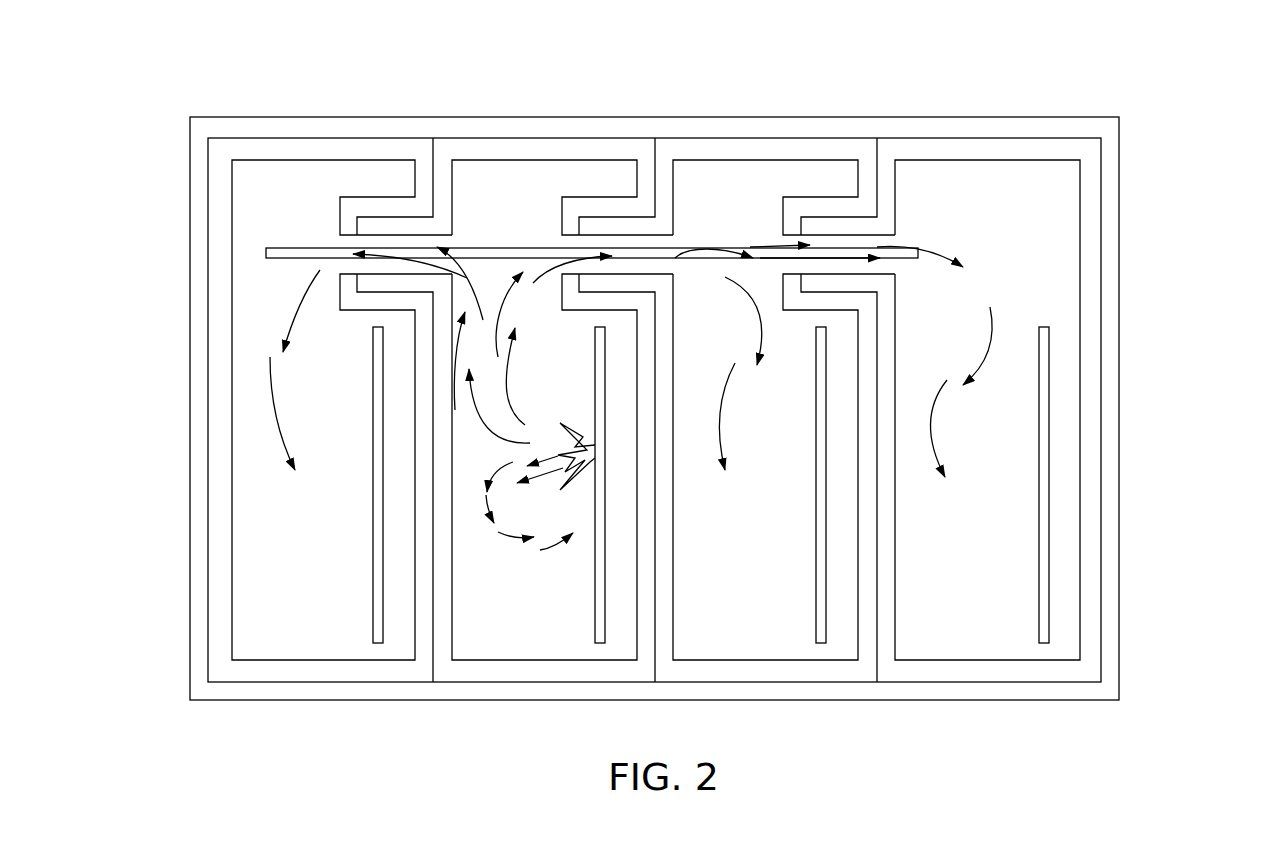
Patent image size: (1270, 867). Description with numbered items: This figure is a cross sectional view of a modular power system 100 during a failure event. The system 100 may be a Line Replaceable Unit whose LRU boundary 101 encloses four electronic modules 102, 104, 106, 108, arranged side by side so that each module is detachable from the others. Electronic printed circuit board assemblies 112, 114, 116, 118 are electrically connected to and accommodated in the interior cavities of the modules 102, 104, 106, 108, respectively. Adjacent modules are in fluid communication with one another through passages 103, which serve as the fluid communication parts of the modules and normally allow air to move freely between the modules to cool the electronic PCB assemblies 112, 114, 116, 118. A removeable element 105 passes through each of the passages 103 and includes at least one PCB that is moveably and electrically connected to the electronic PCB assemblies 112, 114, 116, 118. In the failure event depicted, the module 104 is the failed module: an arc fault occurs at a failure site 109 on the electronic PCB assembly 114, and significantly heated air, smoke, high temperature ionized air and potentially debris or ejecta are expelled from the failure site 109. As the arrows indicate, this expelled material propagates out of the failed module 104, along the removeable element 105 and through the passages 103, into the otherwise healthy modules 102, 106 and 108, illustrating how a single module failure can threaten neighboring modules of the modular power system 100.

The modular power system 100 is at (1145, 73).
The LRU boundary 101 is at (200, 237).
The electronic module 102 is at (305, 148).
The passage 103 is at (378, 263).
The electronic module 104 is at (545, 148).
The removeable element 105 is at (323, 248).
The electronic module 106 is at (770, 148).
The electronic module 108 is at (979, 148).
The failure site 109 is at (592, 443).
The electronic printed circuit board assembly 112 is at (373, 556).
The electronic printed circuit board assembly 114 is at (595, 556).
The electronic printed circuit board assembly 116 is at (816, 556).
The electronic printed circuit board assembly 118 is at (1039, 556).